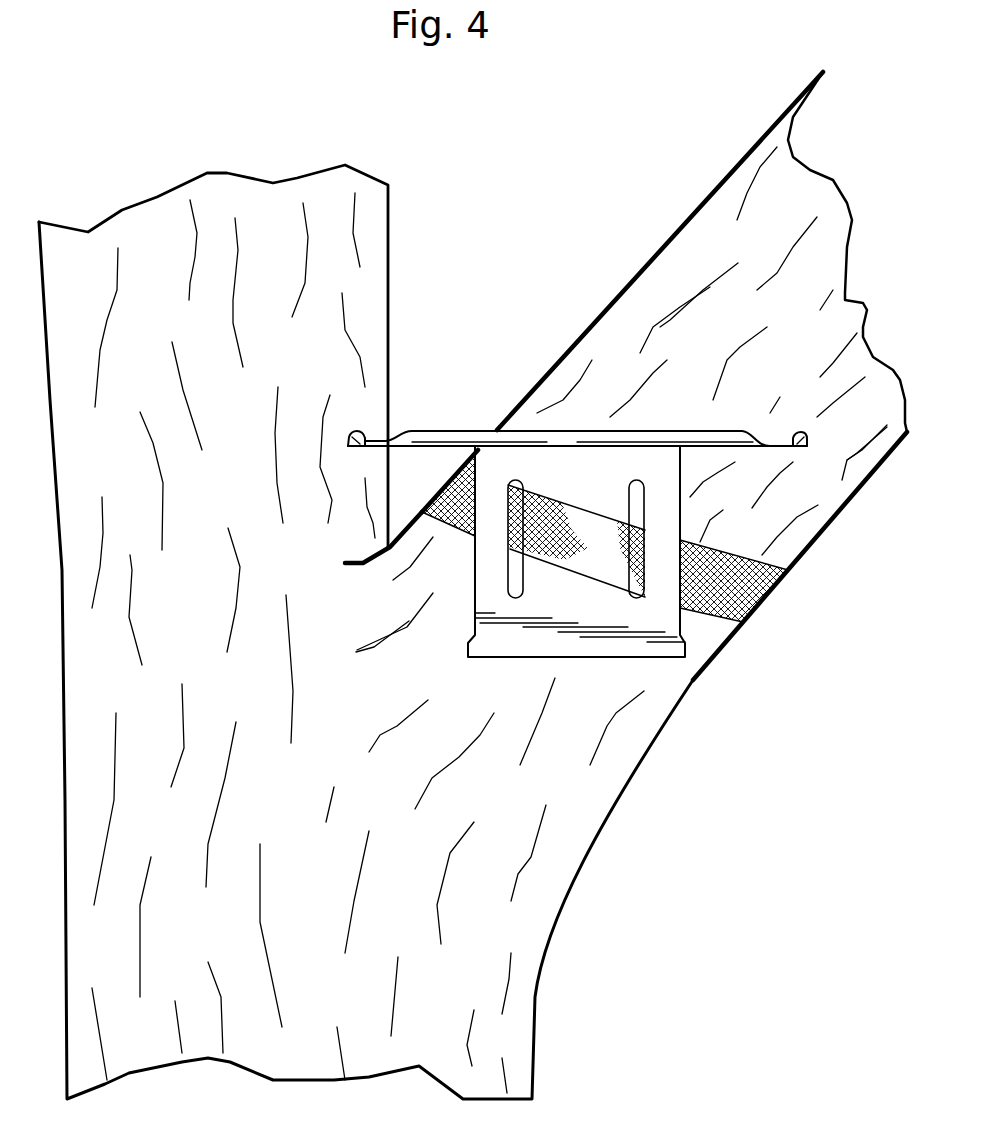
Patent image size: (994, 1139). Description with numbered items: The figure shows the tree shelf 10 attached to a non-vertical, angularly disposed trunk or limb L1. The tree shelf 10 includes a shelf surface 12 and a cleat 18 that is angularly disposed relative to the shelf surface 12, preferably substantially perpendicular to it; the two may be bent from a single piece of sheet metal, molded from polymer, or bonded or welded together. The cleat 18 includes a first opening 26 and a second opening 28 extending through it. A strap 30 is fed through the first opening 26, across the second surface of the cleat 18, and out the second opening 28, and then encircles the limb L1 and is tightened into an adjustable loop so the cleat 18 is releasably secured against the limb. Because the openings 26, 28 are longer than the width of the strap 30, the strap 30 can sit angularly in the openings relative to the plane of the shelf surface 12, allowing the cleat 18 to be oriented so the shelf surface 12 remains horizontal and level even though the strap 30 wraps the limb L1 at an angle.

The tree shelf 10 is at (501, 388).
The shelf surface 12 is at (739, 400).
The non-vertical trunk or limb L1 is at (637, 281).
The cleat 18 is at (615, 544).
The first opening 26 is at (523, 588).
The second opening 28 is at (630, 489).
The strap 30 is at (763, 599).